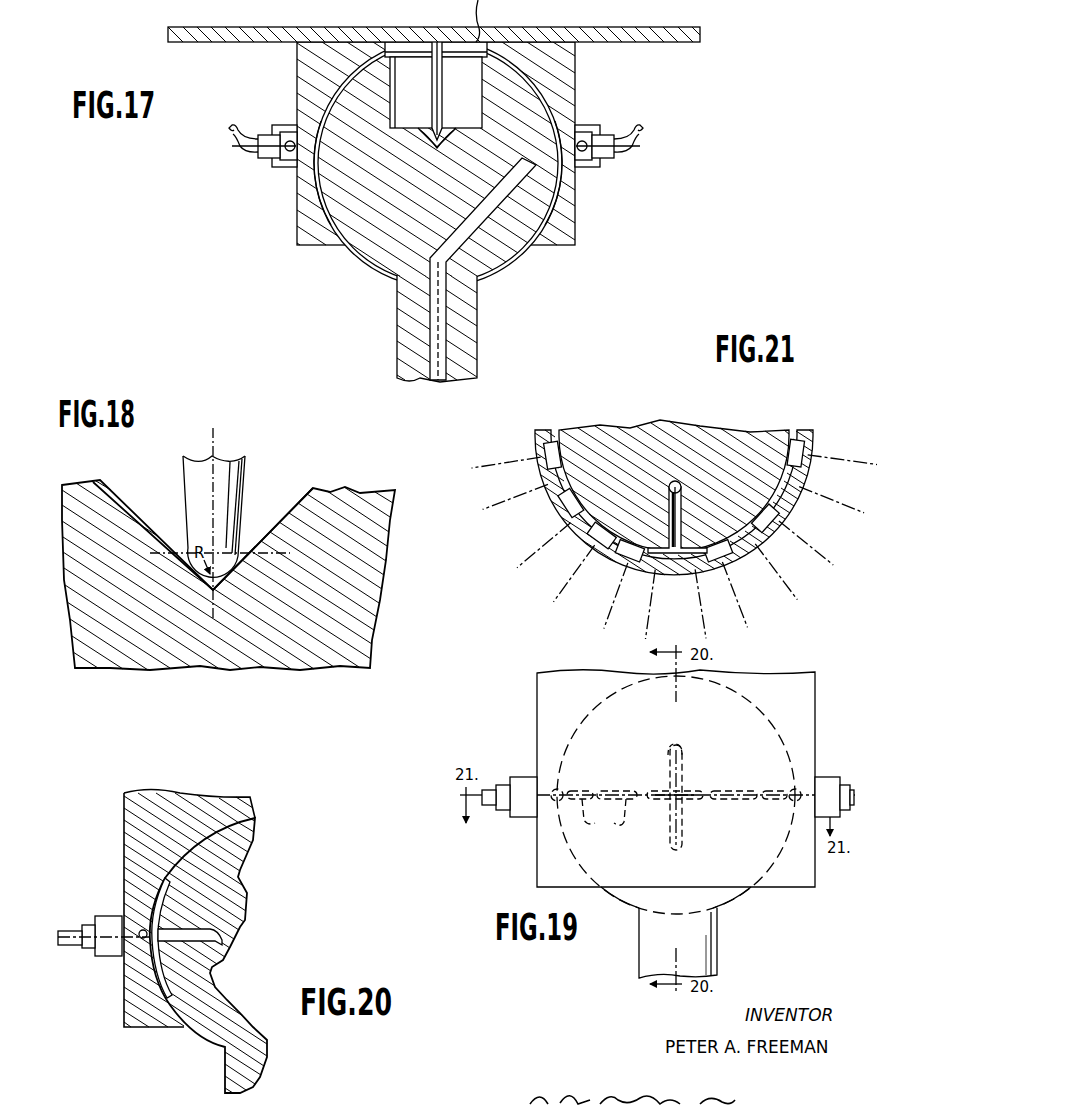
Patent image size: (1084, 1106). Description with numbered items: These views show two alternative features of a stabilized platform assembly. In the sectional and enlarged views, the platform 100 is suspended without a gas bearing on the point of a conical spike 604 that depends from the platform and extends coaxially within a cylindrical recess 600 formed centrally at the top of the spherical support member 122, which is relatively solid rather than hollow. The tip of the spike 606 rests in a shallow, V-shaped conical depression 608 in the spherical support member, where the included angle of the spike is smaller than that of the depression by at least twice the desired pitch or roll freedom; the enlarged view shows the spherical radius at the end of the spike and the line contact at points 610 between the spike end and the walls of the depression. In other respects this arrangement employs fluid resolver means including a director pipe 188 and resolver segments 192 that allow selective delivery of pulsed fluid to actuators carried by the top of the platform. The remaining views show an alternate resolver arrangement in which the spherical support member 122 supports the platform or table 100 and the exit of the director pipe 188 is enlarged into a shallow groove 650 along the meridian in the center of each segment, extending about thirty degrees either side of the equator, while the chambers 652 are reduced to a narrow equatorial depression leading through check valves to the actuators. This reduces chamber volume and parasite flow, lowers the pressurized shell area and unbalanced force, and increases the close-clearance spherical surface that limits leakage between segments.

In FIG. 17, the platform 100 is at (592, 45).
In FIG. 21, the platform 100 is at (742, 560).
In FIG. 19, the platform 100 is at (537, 738).
In FIG. 20, the platform 100 is at (220, 815).
In FIG. 17, the spherical support member 122 is at (500, 276).
In FIG. 21, the spherical support member 122 is at (658, 448).
In FIG. 19, the spherical support member 122 is at (735, 908).
In FIG. 20, the spherical support member 122 is at (248, 892).
In FIG. 17, the director pipe 188 is at (528, 185).
In FIG. 21, the director pipe 188 is at (684, 482).
In FIG. 20, the director pipe 188 is at (225, 940).
In FIG. 17, the resolver segments 192 is at (556, 112).
In FIG. 17, the cylindrical recess 600 is at (478, 125).
In FIG. 17, the spike 604 is at (431, 80).
In FIG. 18, the spike 604 is at (252, 452).
In FIG. 17, the tip of the spike 606 is at (430, 138).
In FIG. 18, the tip of the spike 606 is at (230, 520).
In FIG. 17, the conical depression 608 is at (452, 130).
In FIG. 18, the conical depression 608 is at (304, 487).
In FIG. 18, the line contact points 610 is at (196, 573).
In FIG. 21, the shallow groove 650 is at (681, 516).
In FIG. 19, the shallow groove 650 is at (684, 823).
In FIG. 20, the shallow groove 650 is at (150, 898).
In FIG. 21, the chambers 652 is at (572, 497).
In FIG. 19, the chambers 652 is at (676, 811).
In FIG. 20, the chambers 652 is at (143, 940).